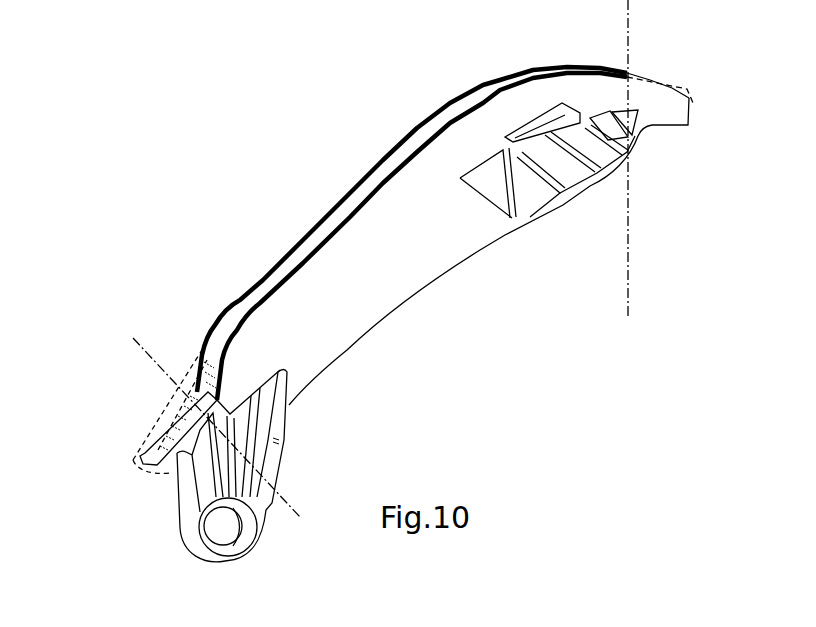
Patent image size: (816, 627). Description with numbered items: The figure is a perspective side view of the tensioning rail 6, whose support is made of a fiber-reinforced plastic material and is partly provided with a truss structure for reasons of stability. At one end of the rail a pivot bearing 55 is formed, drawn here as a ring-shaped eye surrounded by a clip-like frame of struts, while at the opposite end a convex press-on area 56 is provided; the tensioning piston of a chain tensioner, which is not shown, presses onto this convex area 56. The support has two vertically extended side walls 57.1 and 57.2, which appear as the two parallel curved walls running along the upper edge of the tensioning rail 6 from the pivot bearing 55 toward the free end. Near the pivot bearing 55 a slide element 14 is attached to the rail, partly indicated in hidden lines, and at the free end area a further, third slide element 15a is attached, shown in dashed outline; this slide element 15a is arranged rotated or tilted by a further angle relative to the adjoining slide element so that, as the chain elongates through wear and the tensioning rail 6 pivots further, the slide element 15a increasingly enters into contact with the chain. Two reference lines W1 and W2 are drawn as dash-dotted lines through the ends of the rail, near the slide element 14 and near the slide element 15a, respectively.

The tensioning rail 6 is at (447, 352).
The slide element 14 is at (137, 463).
The third slide element 15a is at (693, 102).
The pivot bearing 55 is at (216, 523).
The convex press-on area 56 is at (606, 190).
The side wall 57.1 is at (308, 280).
The side wall 57.2 is at (362, 182).
The first width reference line W1 is at (158, 360).
The second width reference line W2 is at (629, 286).